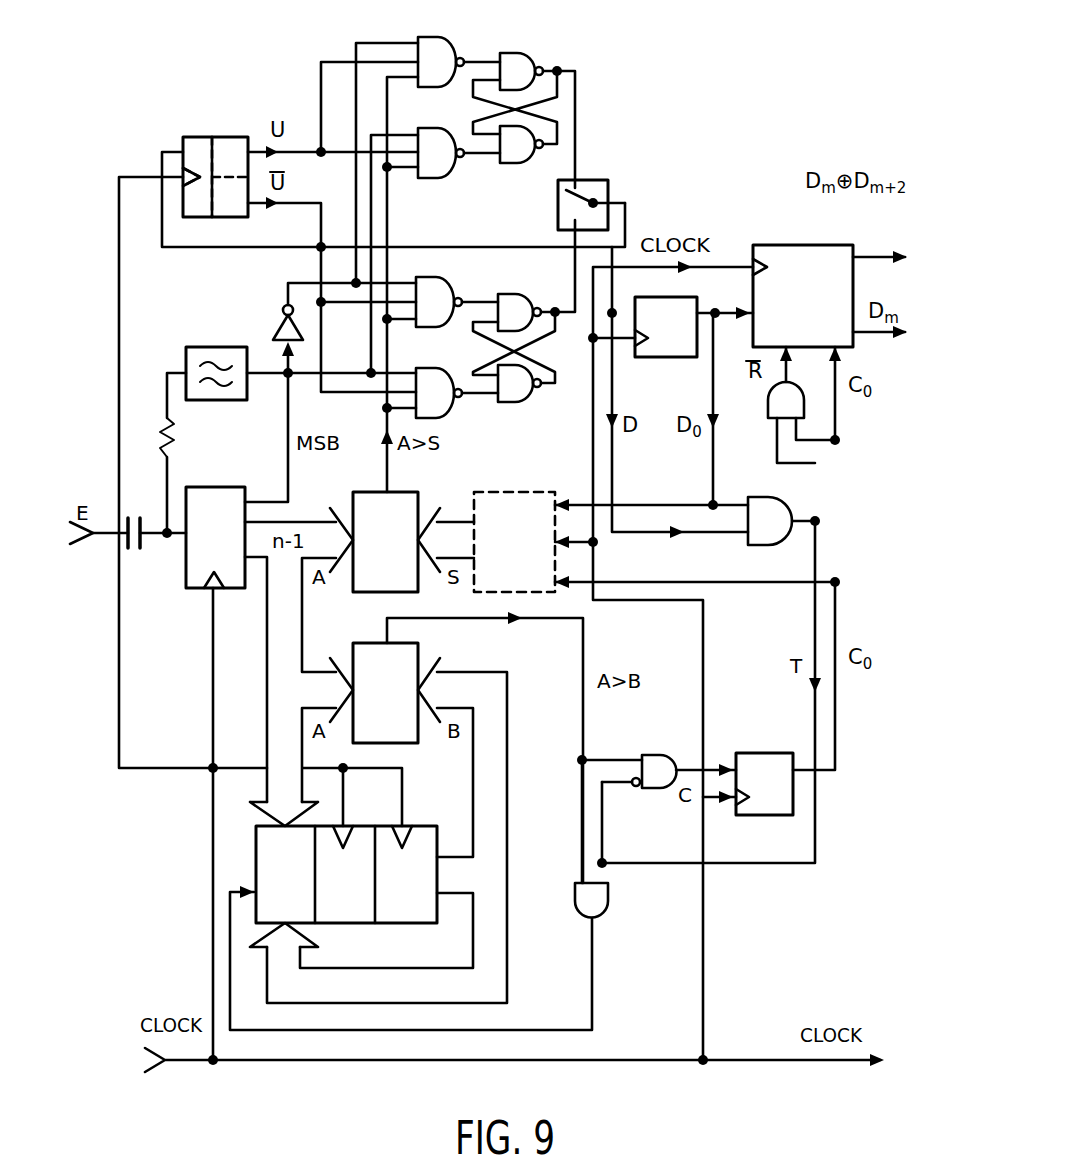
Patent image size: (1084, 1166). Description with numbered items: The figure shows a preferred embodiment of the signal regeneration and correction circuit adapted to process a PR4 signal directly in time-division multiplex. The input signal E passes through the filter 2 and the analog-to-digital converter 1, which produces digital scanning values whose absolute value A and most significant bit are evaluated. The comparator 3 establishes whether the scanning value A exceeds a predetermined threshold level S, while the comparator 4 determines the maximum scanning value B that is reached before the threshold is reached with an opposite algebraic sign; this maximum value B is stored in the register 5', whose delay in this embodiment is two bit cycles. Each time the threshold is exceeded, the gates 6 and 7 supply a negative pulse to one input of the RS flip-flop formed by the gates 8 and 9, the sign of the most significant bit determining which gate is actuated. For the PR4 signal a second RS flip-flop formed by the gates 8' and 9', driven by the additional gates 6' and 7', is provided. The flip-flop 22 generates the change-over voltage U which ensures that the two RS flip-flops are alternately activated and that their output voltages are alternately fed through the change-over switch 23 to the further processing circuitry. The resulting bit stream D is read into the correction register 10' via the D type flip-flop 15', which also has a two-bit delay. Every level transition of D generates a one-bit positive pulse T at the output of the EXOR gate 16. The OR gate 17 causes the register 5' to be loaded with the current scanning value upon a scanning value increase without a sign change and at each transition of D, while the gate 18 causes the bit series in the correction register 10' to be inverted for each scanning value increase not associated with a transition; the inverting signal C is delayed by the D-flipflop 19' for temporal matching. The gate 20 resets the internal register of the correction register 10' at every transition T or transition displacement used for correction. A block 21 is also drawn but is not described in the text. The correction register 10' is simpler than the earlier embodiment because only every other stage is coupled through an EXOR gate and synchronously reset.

The analog-to-digital converter 1 is at (193, 590).
The filter 2 is at (232, 347).
The comparator 3 is at (354, 494).
The comparator 4 is at (366, 646).
The register 5' is at (343, 884).
The gate 6 is at (441, 47).
The gate 7 is at (441, 139).
The gate of RS flip-flop 8 is at (521, 48).
The gate of RS flip-flop 9 is at (520, 171).
The gate 6' is at (447, 291).
The gate 7' is at (442, 378).
The gate of RS flip-flop 8' is at (524, 300).
The gate of RS flip-flop 9' is at (513, 403).
The correction register 10' is at (803, 276).
The D type flip-flop 15' is at (661, 347).
The EXOR gate 16 is at (750, 541).
The OR gate 17 is at (608, 902).
The gate 18 is at (660, 790).
The D-flipflop 19' is at (764, 759).
The gate 20 is at (766, 404).
The control block 21 is at (530, 492).
The flip-flop 22 is at (225, 137).
The change-over switch 23 is at (590, 182).